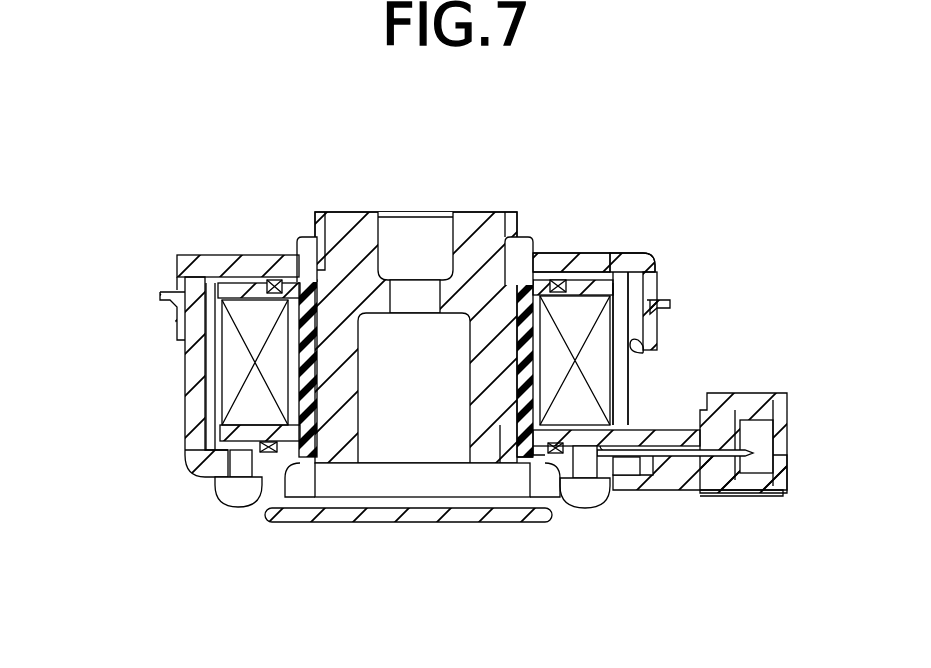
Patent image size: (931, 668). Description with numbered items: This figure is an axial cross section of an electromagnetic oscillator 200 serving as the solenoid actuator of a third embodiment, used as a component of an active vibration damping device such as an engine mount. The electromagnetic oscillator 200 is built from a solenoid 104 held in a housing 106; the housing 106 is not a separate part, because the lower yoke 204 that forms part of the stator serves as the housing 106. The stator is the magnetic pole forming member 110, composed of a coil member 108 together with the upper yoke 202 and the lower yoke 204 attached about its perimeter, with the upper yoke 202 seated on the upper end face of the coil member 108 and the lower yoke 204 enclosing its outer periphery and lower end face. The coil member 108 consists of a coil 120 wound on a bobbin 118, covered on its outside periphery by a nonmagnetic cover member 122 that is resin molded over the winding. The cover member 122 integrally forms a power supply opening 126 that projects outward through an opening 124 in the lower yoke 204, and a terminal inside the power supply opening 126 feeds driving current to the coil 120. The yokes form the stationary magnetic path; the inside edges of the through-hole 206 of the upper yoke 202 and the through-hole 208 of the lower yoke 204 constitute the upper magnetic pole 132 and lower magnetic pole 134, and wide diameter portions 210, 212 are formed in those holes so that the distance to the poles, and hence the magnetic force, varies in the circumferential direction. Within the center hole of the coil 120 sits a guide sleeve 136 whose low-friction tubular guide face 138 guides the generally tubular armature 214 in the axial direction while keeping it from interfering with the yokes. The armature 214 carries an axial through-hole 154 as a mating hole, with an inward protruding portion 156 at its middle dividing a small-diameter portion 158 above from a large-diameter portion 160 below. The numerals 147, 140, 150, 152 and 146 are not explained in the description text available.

The electromagnetic oscillator 200 is at (615, 147).
The solenoid 104 is at (627, 197).
The magnetic pole forming member 110 is at (668, 260).
The cover member 122 is at (608, 258).
The bobbin 118 is at (613, 313).
The coil 120 is at (648, 312).
The opening 124 is at (645, 358).
The coil member 108 is at (630, 381).
The power supply opening 126 is at (722, 400).
The upper magnetic pole 132 is at (303, 243).
The top plate 147 is at (300, 250).
The engagement tab 140 is at (172, 290).
The lower yoke 204 is at (144, 377).
The housing 106 is at (196, 362).
The guide sleeve 136 is at (288, 383).
The through-hole 206 is at (308, 238).
The stator core 150 is at (330, 215).
The armature 214 is at (360, 238).
The through-hole 154 is at (398, 217).
The small-diameter portion 158 is at (445, 232).
The large-diameter portion 160 is at (467, 352).
The wide diameter portion 210 is at (522, 240).
The upper yoke 202 is at (598, 263).
The inward protruding portion 156 is at (378, 297).
The lower magnetic pole 134 is at (272, 498).
The through-hole 208 is at (328, 490).
The yoke plate 152 is at (337, 482).
The bottom plate 146 is at (395, 515).
The tubular guide face 138 is at (513, 427).
The wide diameter portion 212 is at (512, 485).